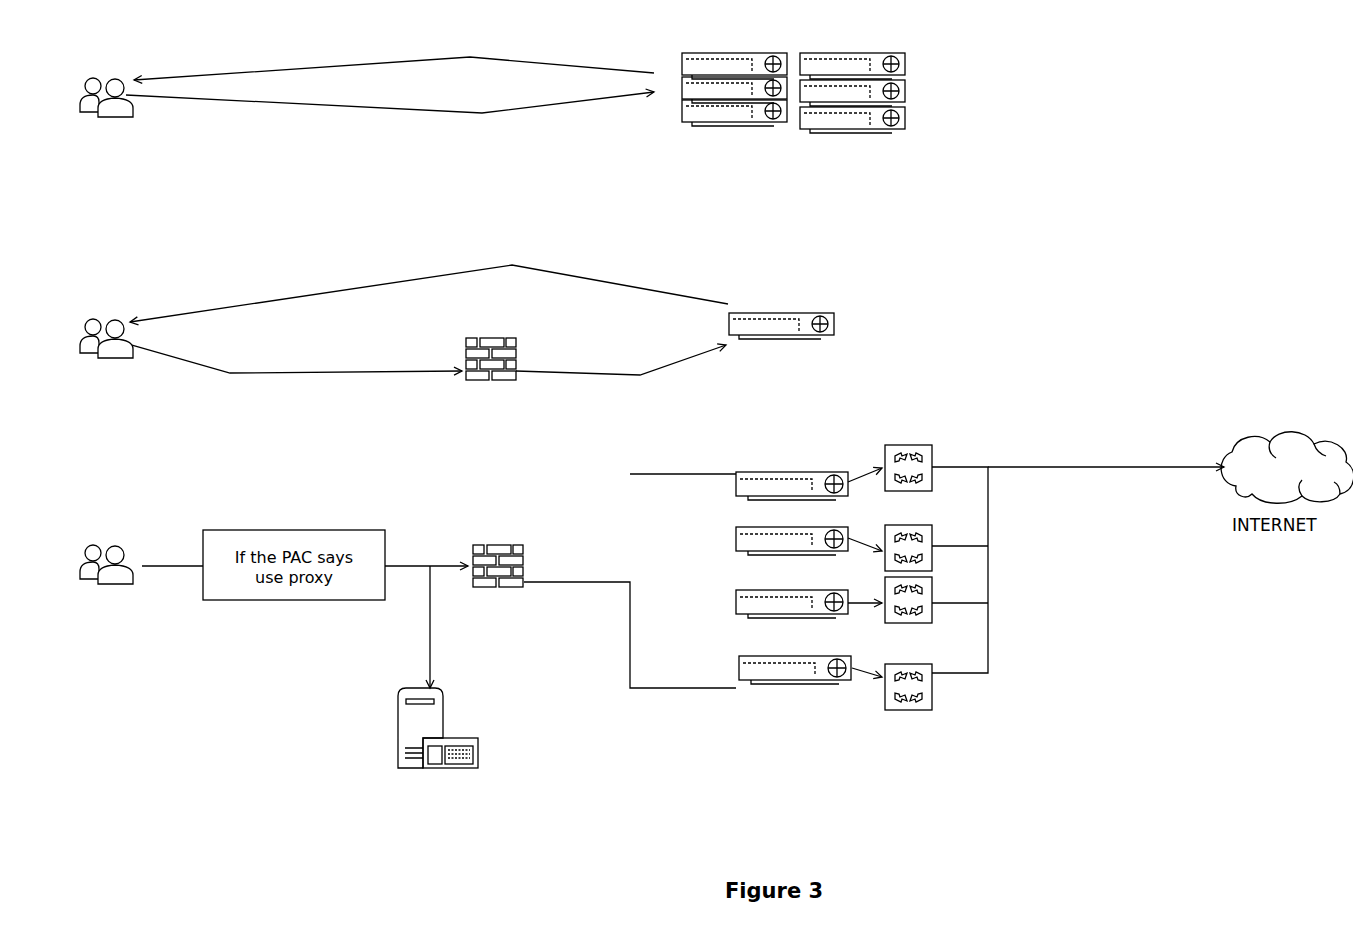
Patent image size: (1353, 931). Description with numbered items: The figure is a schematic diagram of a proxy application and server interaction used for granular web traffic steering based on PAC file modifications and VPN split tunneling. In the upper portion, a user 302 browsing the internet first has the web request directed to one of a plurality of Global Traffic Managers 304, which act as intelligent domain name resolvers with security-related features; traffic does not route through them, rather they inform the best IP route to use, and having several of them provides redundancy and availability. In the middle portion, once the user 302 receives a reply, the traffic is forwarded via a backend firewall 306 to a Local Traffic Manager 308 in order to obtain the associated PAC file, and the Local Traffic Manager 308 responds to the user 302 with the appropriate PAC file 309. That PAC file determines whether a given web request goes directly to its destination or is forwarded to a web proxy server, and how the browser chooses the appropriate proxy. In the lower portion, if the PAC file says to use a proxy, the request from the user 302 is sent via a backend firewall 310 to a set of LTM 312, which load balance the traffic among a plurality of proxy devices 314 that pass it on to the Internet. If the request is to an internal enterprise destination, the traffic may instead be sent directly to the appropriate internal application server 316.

The user 302 is at (106, 345).
The Global Traffic Manager 304 is at (793, 77).
The backend firewall 306 is at (491, 376).
The Local Traffic Manager 308 is at (781, 315).
The PAC file 309 is at (429, 291).
The backend firewall 310 is at (498, 553).
The set of LTM 312 is at (793, 567).
The proxy devices 314 is at (906, 562).
The internal application server 316 is at (438, 747).